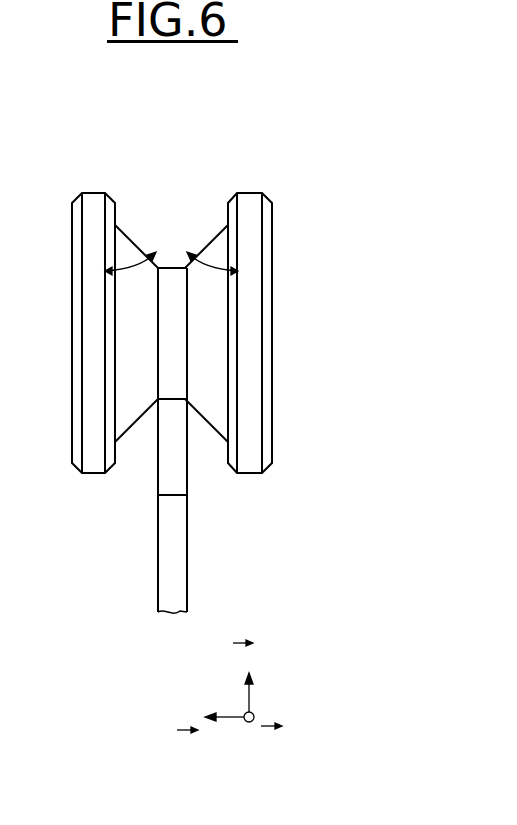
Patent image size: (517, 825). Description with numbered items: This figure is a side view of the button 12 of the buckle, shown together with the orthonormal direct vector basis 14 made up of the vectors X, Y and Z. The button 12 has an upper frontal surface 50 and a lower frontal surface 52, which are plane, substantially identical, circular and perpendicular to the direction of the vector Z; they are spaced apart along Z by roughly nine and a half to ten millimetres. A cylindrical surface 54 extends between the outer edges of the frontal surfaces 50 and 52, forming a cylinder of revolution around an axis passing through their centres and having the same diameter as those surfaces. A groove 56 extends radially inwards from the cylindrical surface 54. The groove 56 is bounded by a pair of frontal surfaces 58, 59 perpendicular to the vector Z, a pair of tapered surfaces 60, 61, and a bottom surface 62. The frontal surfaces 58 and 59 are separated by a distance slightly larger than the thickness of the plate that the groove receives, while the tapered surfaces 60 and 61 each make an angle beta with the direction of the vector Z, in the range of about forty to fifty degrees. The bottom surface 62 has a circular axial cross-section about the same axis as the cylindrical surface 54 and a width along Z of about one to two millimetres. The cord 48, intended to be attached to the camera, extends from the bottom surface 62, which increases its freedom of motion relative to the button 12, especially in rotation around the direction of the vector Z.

The button 12 is at (306, 150).
The orthonormal direct vector basis 14 is at (298, 652).
The cord 48 is at (188, 555).
The upper frontal surface 50 is at (72, 332).
The lower frontal surface 52 is at (272, 333).
The cylindrical surface 54 is at (93, 475).
The groove 56 is at (177, 125).
The frontal surface of the groove 58 is at (115, 221).
The frontal surface of the groove 59 is at (228, 221).
The tapered surface 60 is at (138, 258).
The tapered surface 61 is at (204, 258).
The bottom surface 62 is at (172, 264).